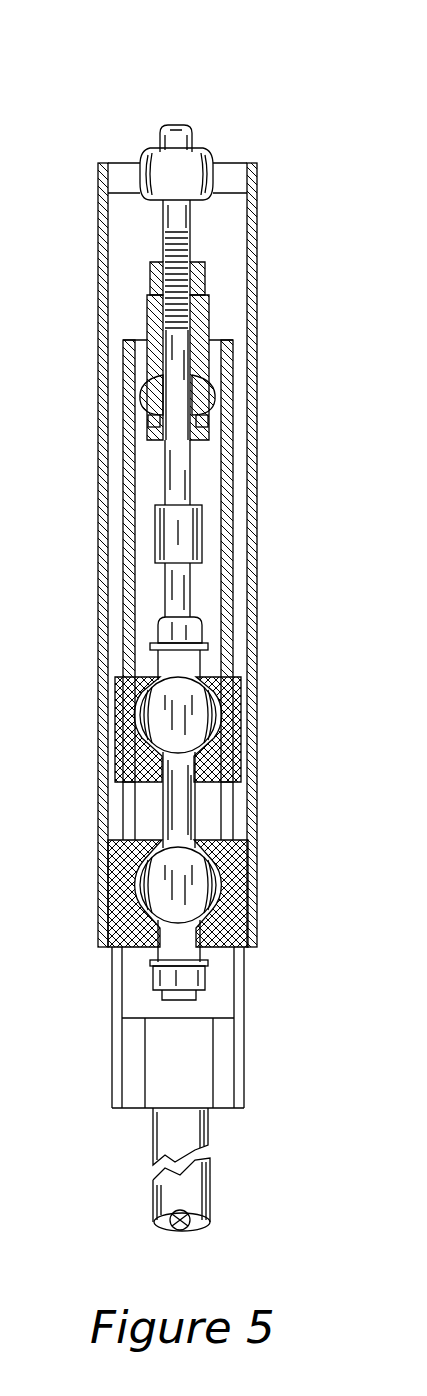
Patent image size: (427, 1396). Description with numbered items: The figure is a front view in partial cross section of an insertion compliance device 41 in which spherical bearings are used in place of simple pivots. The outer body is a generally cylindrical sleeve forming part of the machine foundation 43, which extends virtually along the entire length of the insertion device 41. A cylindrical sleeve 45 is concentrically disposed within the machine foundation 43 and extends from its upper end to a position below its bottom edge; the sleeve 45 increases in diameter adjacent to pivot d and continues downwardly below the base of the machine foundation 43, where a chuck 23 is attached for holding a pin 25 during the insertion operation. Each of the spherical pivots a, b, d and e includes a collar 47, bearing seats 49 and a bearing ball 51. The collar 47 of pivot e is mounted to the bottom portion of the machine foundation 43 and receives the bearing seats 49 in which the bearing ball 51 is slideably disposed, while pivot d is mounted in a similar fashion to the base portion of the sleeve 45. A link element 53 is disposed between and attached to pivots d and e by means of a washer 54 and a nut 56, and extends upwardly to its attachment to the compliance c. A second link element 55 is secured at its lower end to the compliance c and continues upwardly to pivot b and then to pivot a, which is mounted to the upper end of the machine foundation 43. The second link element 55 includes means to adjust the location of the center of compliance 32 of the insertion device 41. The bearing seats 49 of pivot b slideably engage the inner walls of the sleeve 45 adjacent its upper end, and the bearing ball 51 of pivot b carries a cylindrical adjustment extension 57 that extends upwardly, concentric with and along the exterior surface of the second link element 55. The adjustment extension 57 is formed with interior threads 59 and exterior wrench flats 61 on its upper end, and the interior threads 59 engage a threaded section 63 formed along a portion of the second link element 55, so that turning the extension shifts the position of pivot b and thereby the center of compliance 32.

The insertion compliance device 41 is at (241, 86).
The machine foundation 43 is at (98, 210).
The cylindrical sleeve 45 is at (98, 515).
The collar 47 is at (150, 421).
The bearing seats 49 is at (140, 400).
The bearing ball 51 is at (212, 421).
The link element 53 is at (200, 815).
The washer 54 is at (150, 646).
The second link element 55 is at (200, 488).
The nut 56 is at (160, 625).
The cylindrical adjustment extension 57 is at (209, 305).
The interior threads 59 is at (172, 330).
The exterior wrench flats 61 is at (148, 280).
The threaded section 63 is at (188, 247).
The chuck 23 is at (244, 1085).
The pin 25 is at (210, 1170).
The center of compliance 32 is at (182, 1230).
The spherical pivot a is at (216, 150).
The spherical pivot b is at (226, 395).
The compliance c is at (204, 532).
The spherical pivot d is at (230, 701).
The spherical pivot e is at (237, 880).